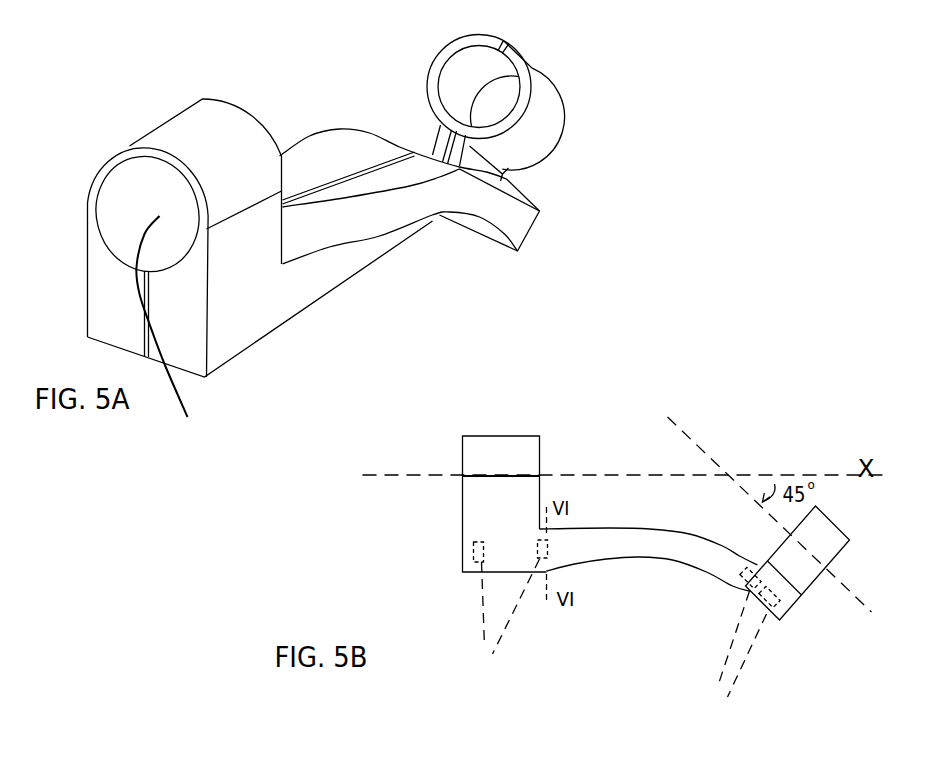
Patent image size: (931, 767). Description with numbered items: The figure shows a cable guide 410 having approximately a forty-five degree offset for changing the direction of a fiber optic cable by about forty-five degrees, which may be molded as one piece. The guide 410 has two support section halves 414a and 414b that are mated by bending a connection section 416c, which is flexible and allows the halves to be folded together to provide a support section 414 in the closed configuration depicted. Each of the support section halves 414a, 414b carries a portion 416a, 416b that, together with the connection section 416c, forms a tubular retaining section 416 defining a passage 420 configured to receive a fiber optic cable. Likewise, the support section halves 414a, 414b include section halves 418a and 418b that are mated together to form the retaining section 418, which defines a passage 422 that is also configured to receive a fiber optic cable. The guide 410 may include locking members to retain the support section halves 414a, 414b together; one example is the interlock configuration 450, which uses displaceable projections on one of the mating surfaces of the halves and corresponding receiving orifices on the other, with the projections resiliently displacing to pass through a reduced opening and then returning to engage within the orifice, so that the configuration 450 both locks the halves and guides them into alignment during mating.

In FIG. 5A, the cable guide 410 is at (300, 107).
In FIG. 5B, the cable guide 410 is at (592, 467).
In FIG. 5B, the support section 414 is at (607, 572).
In FIG. 5A, the support section half 414a is at (349, 147).
In FIG. 5A, the support section half 414b is at (370, 222).
In FIG. 5B, the tubular retaining section 416 is at (457, 502).
In FIG. 5A, the portion of tubular retaining section 416a is at (110, 227).
In FIG. 5A, the portion of tubular retaining section 416b is at (220, 233).
In FIG. 5A, the connection section 416c is at (172, 132).
In FIG. 5B, the retaining section 418 is at (813, 590).
In FIG. 5A, the section half 418a is at (449, 76).
In FIG. 5A, the section half 418b is at (542, 118).
In FIG. 5A, the passage 420 is at (185, 338).
In FIG. 5A, the passage 422 is at (499, 92).
In FIG. 5B, the interlock configuration 450 is at (627, 636).